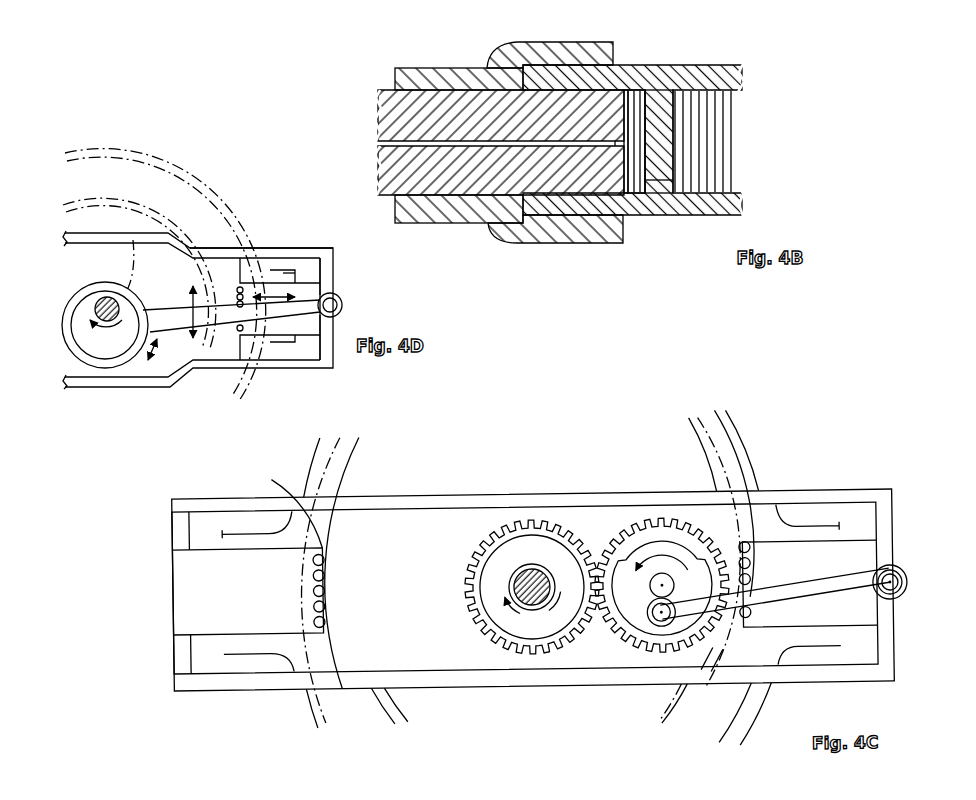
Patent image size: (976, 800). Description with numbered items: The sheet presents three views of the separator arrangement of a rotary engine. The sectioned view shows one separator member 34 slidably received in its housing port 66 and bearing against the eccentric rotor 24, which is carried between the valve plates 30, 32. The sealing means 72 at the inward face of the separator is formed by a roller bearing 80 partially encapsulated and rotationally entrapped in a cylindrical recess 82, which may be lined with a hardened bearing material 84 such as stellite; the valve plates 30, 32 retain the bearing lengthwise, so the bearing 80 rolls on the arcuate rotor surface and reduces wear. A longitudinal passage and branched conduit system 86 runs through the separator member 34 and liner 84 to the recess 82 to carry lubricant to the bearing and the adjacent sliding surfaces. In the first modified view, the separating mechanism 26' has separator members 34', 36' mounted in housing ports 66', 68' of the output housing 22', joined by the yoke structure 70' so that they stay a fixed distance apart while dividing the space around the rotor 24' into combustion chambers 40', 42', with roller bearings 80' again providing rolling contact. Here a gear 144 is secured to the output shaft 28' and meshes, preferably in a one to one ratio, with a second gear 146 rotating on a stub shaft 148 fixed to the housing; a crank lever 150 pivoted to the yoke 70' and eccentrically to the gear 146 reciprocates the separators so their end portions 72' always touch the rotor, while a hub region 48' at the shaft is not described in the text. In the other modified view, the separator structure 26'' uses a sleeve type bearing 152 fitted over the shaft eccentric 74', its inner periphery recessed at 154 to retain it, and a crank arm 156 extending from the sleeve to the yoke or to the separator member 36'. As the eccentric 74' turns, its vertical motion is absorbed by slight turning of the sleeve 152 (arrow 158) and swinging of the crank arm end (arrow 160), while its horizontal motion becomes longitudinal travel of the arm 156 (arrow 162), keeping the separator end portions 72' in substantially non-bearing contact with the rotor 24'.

In FIG. 4B, the housing port 66 is at (459, 126).
In FIG. 4B, the separator member 34 is at (499, 112).
In FIG. 4B, the valve plate 30 is at (553, 80).
In FIG. 4B, the sealing means 72 is at (633, 138).
In FIG. 4B, the hardened bearing material 84 is at (631, 103).
In FIG. 4B, the eccentric rotor 24 is at (633, 119).
In FIG. 4B, the branched conduit system 86 is at (457, 153).
In FIG. 4B, the valve plate 32 is at (627, 213).
In FIG. 4B, the cylindrical recess 82 is at (645, 180).
In FIG. 4B, the roller bearing 80 is at (667, 219).
In FIG. 4D, the output housing 22' is at (165, 259).
In FIG. 4C, the output housing 22' is at (570, 565).
In FIG. 4D, the rotor 24' is at (155, 253).
In FIG. 4C, the rotor 24' is at (729, 706).
In FIG. 4D, the yoke structure 70' is at (261, 223).
In FIG. 4C, the yoke structure 70' is at (808, 557).
In FIG. 4D, the housing port 68' is at (295, 233).
In FIG. 4D, the separator structure 26'' is at (198, 300).
In FIG. 4D, the recess 154 is at (133, 240).
In FIG. 4D, the end portions 72' is at (225, 276).
In FIG. 4C, the end portions 72' is at (497, 566).
In FIG. 4D, the arrow 162 is at (270, 277).
In FIG. 4D, the sleeve type bearing 152 is at (83, 303).
In FIG. 4D, the output shaft 28' is at (106, 289).
In FIG. 4C, the output shaft 28' is at (545, 529).
In FIG. 4D, the arrow 160 is at (190, 297).
In FIG. 4D, the arrow 158 is at (160, 348).
In FIG. 4D, the crank arm 156 is at (272, 343).
In FIG. 4D, the separator member 36' is at (306, 325).
In FIG. 4C, the separator member 36' is at (839, 561).
In FIG. 4D, the shaft eccentric 74' is at (105, 353).
In FIG. 4D, the hub 48' is at (224, 354).
In FIG. 4C, the hub 48' is at (525, 639).
In FIG. 4C, the housing port 66' is at (243, 566).
In FIG. 4C, the roller bearings 80' is at (529, 585).
In FIG. 4C, the separator member 34' is at (228, 598).
In FIG. 4C, the gear 144 is at (495, 530).
In FIG. 4C, the second gear 146 is at (635, 522).
In FIG. 4C, the stub shaft 148 is at (663, 586).
In FIG. 4C, the combustion chamber 40' is at (759, 439).
In FIG. 4C, the separating mechanism 26' is at (547, 568).
In FIG. 4C, the crank lever 150 is at (837, 592).
In FIG. 4C, the combustion chamber 42' is at (605, 716).